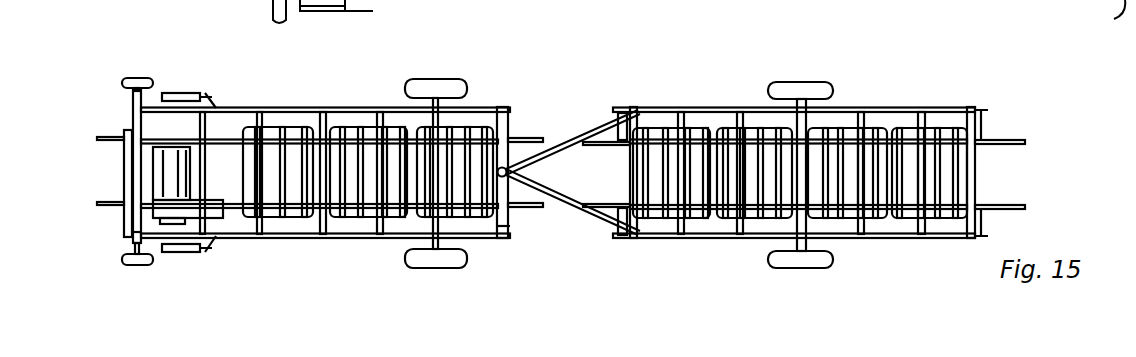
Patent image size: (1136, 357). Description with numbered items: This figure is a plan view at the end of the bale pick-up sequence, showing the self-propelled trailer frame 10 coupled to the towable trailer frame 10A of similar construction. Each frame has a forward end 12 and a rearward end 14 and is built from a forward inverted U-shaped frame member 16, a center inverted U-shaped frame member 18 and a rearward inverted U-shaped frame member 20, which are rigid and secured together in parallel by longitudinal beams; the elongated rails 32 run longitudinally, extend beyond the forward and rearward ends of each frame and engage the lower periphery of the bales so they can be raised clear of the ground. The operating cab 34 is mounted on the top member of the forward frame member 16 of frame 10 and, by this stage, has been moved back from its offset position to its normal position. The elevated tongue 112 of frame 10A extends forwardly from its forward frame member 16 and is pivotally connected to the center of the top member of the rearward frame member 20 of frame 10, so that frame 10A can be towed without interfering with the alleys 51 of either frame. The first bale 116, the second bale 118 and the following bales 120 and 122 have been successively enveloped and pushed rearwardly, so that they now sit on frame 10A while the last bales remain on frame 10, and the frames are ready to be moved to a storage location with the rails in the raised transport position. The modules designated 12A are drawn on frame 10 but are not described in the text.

The self-propelled trailer frame 10 is at (308, 82).
The towable trailer frame 10A is at (718, 98).
The forward end 12 is at (600, 111).
The cargo modules 12A is at (405, 128).
The rearward end 14 is at (516, 228).
The forward inverted U-shaped frame member 16 is at (133, 241).
The center inverted U-shaped frame member 18 is at (322, 150).
The rearward inverted U-shaped frame member 20 is at (512, 238).
The rails 32 is at (523, 140).
The operating cab 34 is at (205, 207).
The alleys 51 is at (122, 172).
The tongue 112 is at (580, 208).
The first bale 116 is at (890, 128).
The second bale 118 is at (868, 128).
The bale 120 is at (775, 128).
The bale 122 is at (716, 128).